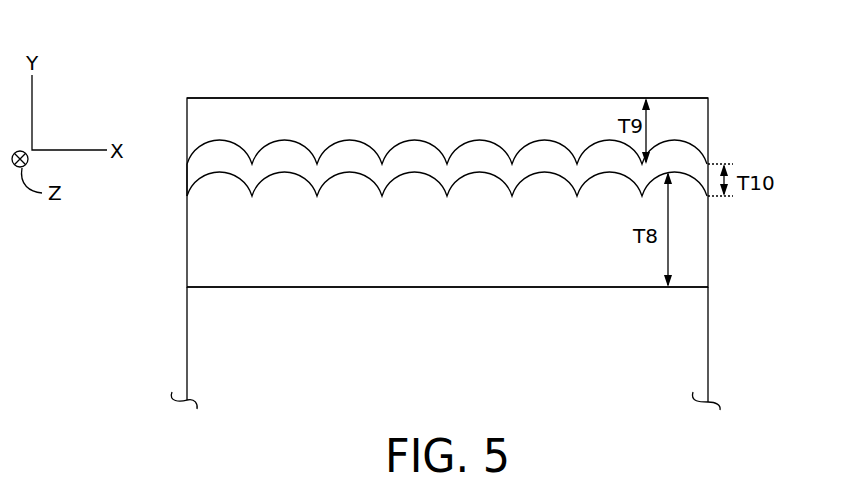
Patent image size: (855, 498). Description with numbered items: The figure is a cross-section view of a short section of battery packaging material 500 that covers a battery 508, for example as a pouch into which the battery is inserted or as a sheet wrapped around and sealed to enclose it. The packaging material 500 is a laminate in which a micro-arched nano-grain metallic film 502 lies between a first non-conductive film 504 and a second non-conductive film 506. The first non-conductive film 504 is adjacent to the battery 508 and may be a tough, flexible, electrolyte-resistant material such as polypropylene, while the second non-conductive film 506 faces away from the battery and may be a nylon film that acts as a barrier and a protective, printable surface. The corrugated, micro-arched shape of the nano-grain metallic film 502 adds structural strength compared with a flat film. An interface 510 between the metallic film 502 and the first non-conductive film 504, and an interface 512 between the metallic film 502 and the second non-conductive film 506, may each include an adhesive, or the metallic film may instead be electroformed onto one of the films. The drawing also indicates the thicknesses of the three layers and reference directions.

The battery packaging material 500 is at (733, 44).
The micro-arched nano-grain metallic film 502 is at (187, 172).
The first non-conductive film 504 is at (263, 255).
The second non-conductive film 506 is at (263, 132).
The battery 508 is at (445, 348).
The interface 510 is at (503, 180).
The interface 512 is at (418, 141).